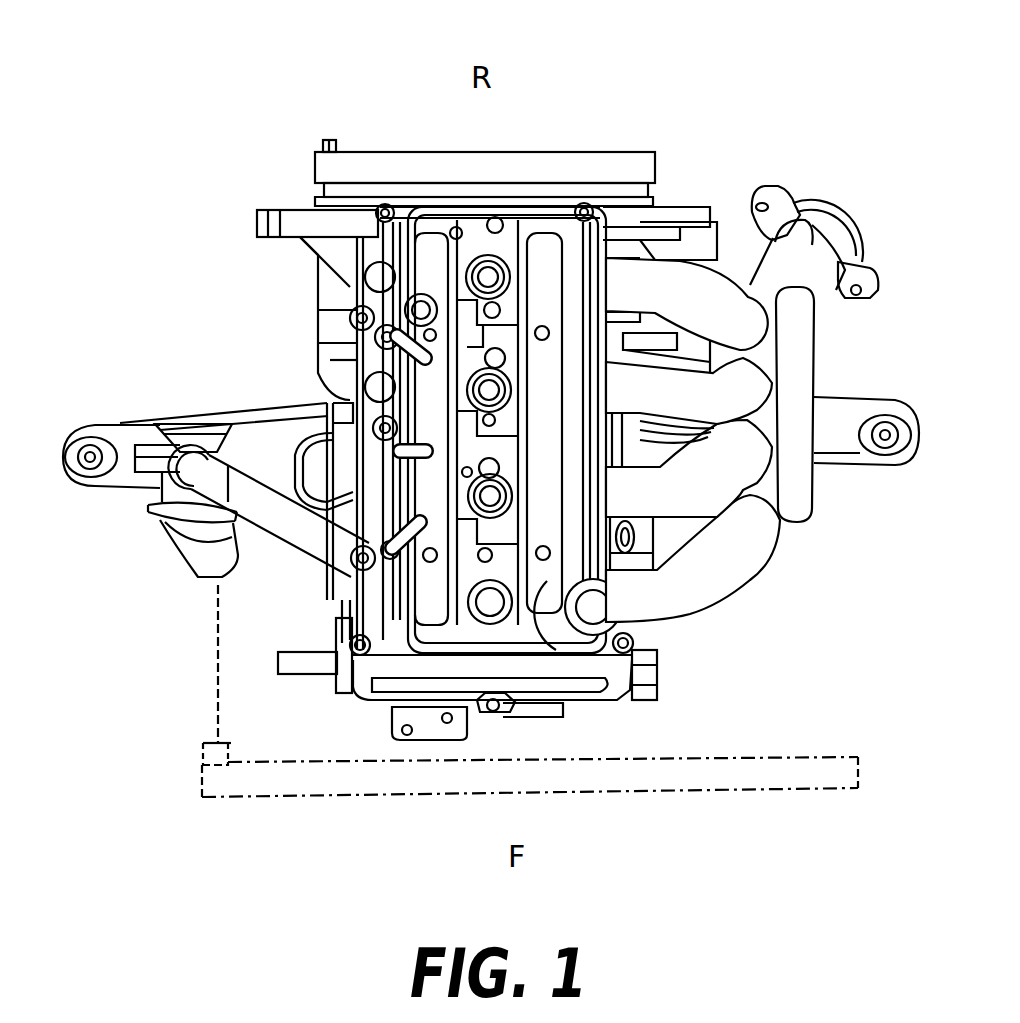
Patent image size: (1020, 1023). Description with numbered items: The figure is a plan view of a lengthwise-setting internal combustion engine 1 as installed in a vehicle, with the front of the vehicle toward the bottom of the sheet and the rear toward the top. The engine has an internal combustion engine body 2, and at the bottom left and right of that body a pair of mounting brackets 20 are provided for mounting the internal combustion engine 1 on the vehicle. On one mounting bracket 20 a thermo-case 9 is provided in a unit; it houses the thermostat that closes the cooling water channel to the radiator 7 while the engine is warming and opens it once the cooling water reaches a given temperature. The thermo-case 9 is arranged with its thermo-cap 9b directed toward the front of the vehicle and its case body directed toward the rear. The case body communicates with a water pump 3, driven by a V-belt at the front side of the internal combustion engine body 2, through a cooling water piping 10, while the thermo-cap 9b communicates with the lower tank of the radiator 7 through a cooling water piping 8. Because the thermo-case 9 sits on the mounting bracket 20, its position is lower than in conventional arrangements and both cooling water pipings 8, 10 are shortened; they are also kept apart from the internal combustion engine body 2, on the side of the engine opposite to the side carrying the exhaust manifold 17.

The internal combustion engine 1 is at (733, 96).
The internal combustion engine body 2 is at (670, 207).
The water pump 3 is at (323, 622).
The radiator 7 is at (303, 800).
The cooling water piping 8 is at (215, 680).
The thermo-case 9 is at (153, 518).
The thermo-cap 9b is at (187, 533).
The cooling water piping 10 is at (277, 523).
The exhaust manifold 17 is at (730, 583).
The mounting bracket 20 is at (118, 490).